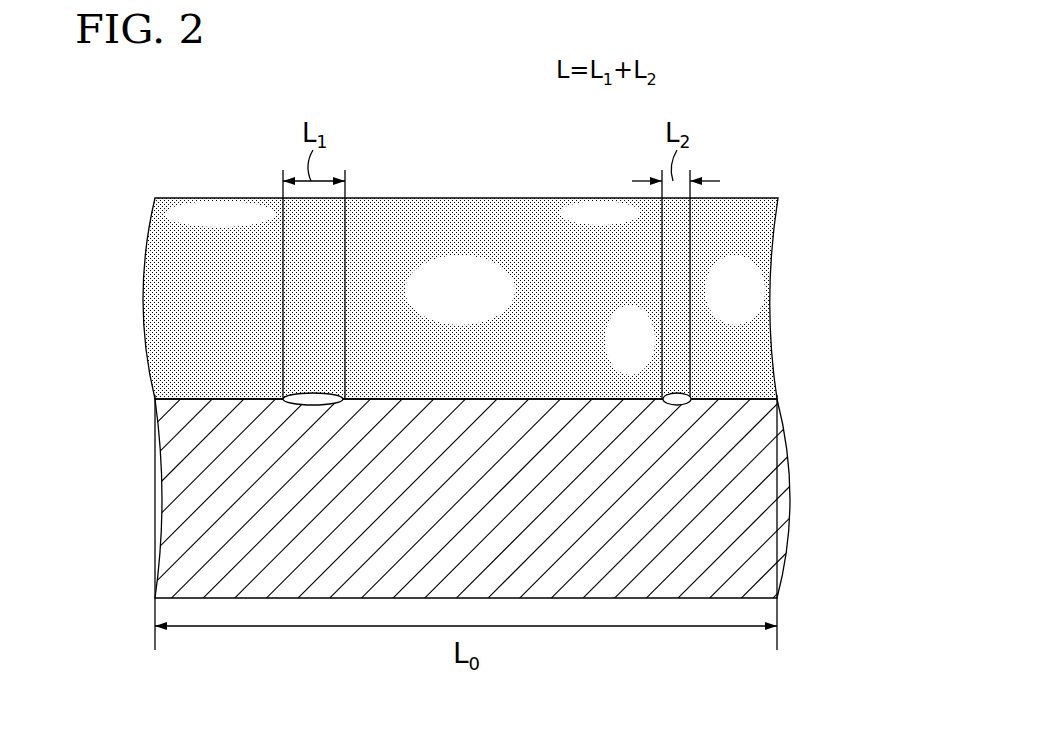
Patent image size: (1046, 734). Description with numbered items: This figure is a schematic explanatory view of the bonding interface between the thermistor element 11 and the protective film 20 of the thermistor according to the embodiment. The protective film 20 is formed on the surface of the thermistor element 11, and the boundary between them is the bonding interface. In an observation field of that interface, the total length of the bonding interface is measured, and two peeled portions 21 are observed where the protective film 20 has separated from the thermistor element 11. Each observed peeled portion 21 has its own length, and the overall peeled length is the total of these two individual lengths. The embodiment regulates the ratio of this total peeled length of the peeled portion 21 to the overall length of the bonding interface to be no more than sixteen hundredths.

The thermistor element 11 is at (205, 497).
The protective film 20 is at (493, 240).
The peeled portion 21 is at (313, 393).